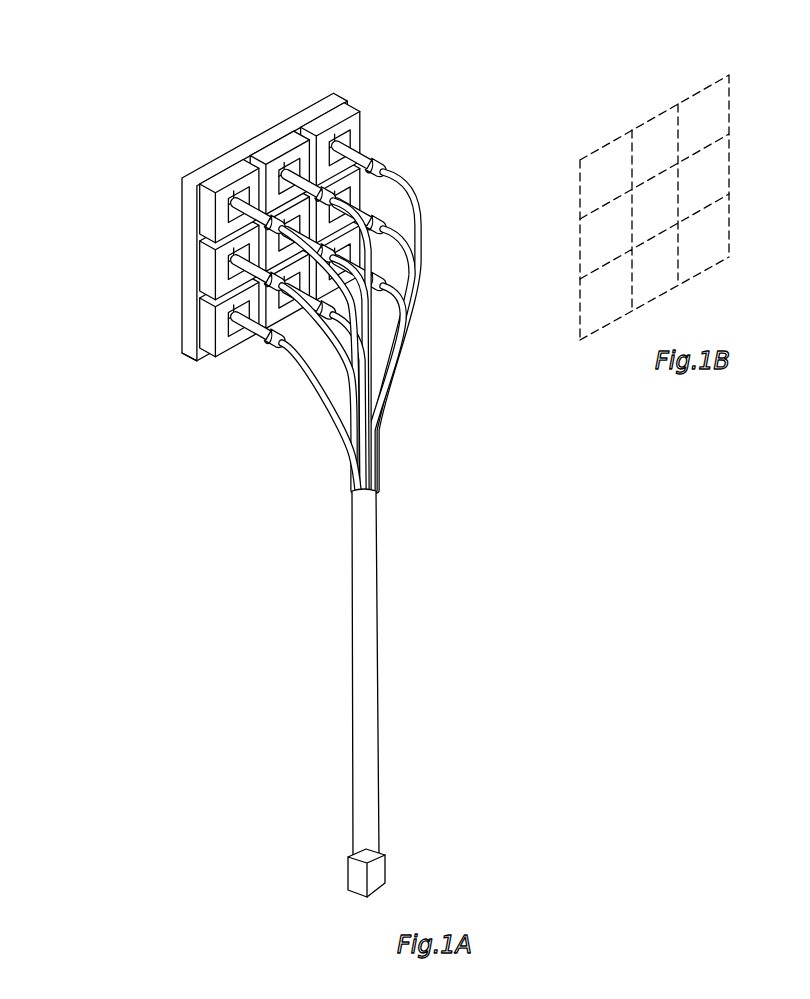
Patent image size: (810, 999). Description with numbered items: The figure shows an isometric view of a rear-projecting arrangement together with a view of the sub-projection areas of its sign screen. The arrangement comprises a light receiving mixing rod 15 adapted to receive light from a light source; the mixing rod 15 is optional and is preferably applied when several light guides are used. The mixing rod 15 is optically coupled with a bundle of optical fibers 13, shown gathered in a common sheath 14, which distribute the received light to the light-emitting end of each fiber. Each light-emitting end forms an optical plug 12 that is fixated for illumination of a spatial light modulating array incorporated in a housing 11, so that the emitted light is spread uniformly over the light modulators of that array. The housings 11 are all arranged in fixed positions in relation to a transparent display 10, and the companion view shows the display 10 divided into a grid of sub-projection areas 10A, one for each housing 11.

In FIG. 1A, the transparent display 10 is at (183, 255).
In FIG. 1B, the transparent display 10 is at (578, 253).
In FIG. 1B, the electrode array cells 10A is at (600, 165).
In FIG. 1A, the housing 11 is at (222, 178).
In FIG. 1A, the optical plug 12 is at (373, 157).
In FIG. 1A, the optical fibers 13 is at (333, 368).
In FIG. 1A, the cable sheath 14 is at (352, 588).
In FIG. 1A, the light receiving mixing rod 15 is at (348, 865).